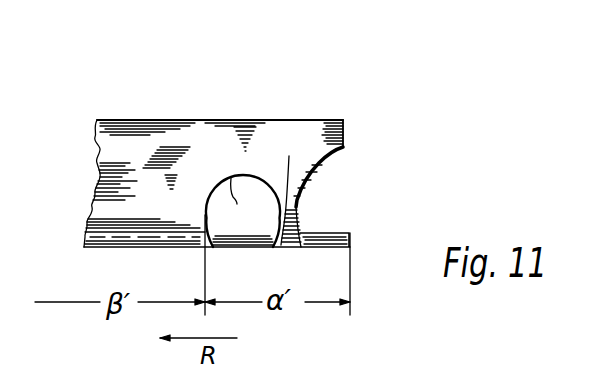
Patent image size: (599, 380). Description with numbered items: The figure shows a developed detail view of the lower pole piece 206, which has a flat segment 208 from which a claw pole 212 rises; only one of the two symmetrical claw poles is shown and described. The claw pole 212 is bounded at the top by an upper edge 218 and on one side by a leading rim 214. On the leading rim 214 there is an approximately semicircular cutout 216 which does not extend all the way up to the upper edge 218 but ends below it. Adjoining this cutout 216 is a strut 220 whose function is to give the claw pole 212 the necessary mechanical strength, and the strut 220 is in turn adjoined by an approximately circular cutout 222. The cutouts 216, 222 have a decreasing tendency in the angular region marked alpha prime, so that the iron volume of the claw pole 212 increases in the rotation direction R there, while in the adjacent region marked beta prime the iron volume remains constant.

The lower pole piece 206 is at (457, 95).
The flat segment 208 is at (323, 233).
The claw pole 212 is at (125, 132).
The leading rim 214 is at (343, 122).
The semicircular cutout 216 is at (327, 168).
The upper edge 218 is at (257, 118).
The strut 220 is at (297, 185).
The circular cutout 222 is at (243, 211).